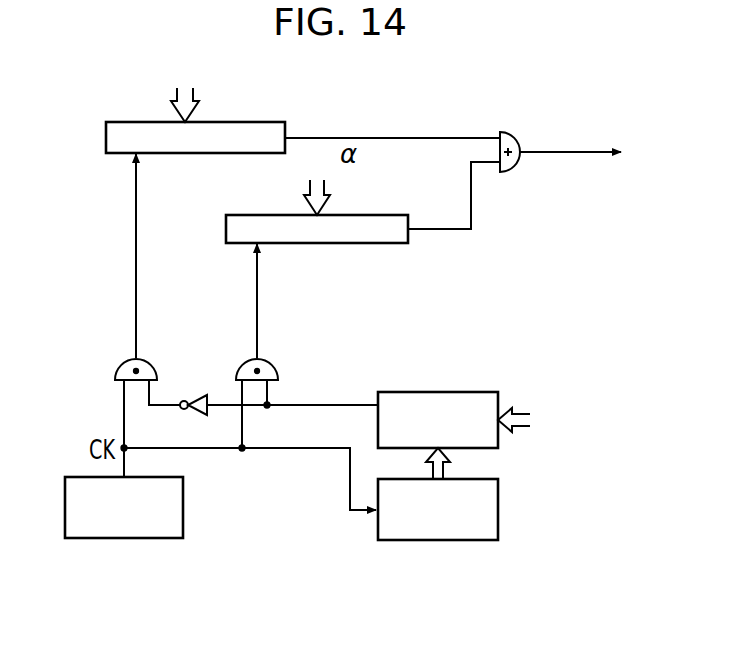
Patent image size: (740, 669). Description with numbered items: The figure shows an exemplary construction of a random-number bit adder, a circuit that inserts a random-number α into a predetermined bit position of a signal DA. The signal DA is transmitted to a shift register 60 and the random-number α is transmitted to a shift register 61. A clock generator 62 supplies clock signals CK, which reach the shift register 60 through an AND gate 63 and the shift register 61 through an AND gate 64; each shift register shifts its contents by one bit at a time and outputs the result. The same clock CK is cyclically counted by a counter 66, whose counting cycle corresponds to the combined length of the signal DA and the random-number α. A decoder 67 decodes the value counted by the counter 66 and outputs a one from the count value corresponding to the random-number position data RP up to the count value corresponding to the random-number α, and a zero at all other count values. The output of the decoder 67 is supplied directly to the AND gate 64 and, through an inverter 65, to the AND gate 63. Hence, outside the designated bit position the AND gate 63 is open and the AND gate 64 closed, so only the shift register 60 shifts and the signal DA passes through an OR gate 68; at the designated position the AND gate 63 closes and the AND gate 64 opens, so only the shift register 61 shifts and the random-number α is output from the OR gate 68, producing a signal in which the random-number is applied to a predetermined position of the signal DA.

The shift register 60 is at (106, 140).
The shift register 61 is at (226, 229).
The clock generator 62 is at (133, 538).
The AND gate 63 is at (117, 378).
The AND gate 64 is at (278, 378).
The inverter 65 is at (199, 396).
The counter 66 is at (450, 540).
The decoder 67 is at (477, 392).
The OR gate 68 is at (515, 133).